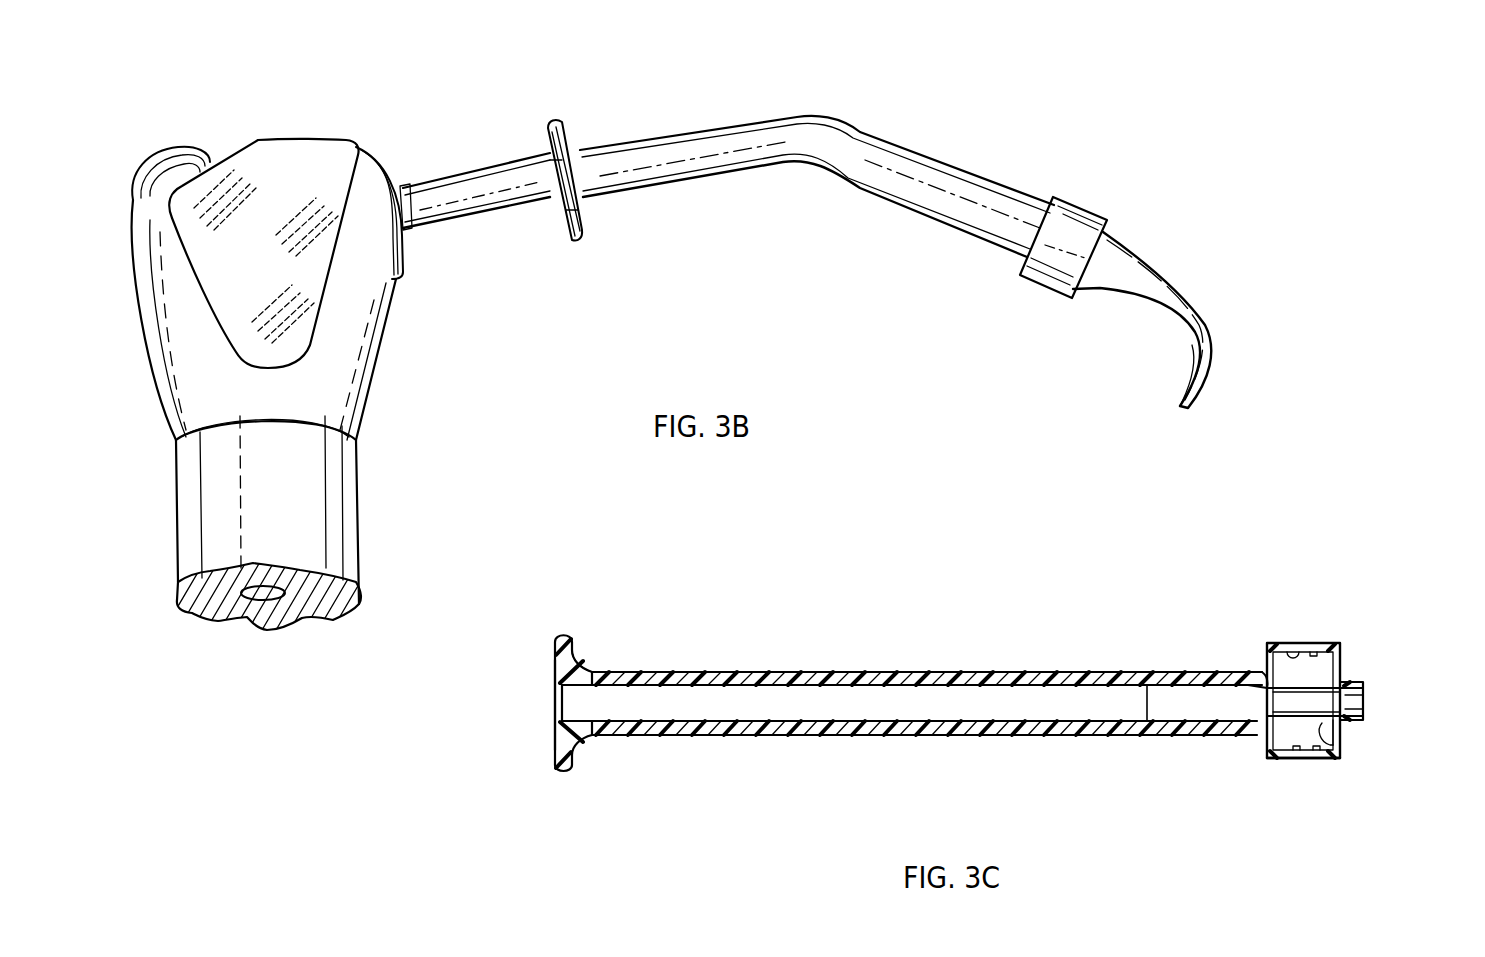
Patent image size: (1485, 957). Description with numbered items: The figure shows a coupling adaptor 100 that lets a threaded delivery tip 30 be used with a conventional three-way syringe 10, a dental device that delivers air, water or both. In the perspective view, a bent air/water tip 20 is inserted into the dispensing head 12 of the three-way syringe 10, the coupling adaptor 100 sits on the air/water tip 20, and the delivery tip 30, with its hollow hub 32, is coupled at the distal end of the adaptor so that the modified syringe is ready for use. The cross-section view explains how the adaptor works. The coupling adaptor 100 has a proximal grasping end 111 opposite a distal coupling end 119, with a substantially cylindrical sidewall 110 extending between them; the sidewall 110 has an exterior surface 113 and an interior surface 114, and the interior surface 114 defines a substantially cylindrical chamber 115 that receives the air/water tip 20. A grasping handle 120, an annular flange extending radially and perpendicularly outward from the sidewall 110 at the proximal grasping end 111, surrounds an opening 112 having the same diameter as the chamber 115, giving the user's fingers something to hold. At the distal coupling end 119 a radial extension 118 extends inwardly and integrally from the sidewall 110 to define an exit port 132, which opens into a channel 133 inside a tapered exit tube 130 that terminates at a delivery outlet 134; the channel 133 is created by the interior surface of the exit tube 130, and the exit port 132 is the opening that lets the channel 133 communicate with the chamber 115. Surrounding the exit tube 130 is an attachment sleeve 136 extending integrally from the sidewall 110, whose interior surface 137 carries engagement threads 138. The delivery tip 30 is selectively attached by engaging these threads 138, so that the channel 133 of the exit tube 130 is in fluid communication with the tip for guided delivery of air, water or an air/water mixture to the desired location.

In FIG. 3B, the three-way syringe 10 is at (401, 139).
In FIG. 3B, the dispensing head 12 is at (308, 140).
In FIG. 3B, the air/water tip 20 is at (430, 228).
In FIG. 3B, the delivery tip 30 is at (1170, 283).
In FIG. 3B, the hollow hub 32 is at (1117, 253).
In FIG. 3B, the coupling adaptor 100 is at (829, 120).
In FIG. 3C, the coupling adaptor 100 is at (757, 634).
In FIG. 3C, the sidewall 110 is at (910, 670).
In FIG. 3C, the proximal grasping end 111 is at (575, 655).
In FIG. 3C, the opening 112 is at (557, 680).
In FIG. 3C, the exterior surface 113 is at (1138, 678).
In FIG. 3C, the interior surface 114 is at (1147, 728).
In FIG. 3C, the chamber 115 is at (1208, 690).
In FIG. 3C, the radial extension 118 is at (1250, 678).
In FIG. 3C, the distal coupling end 119 is at (1263, 652).
In FIG. 3C, the grasping handle 120 is at (563, 637).
In FIG. 3C, the exit tube 130 is at (1354, 668).
In FIG. 3C, the exit port 132 is at (1267, 705).
In FIG. 3C, the channel 133 is at (1367, 695).
In FIG. 3C, the delivery outlet 134 is at (1368, 710).
In FIG. 3C, the attachment sleeve 136 is at (1330, 762).
In FIG. 3C, the interior surface 137 is at (1342, 737).
In FIG. 3C, the engagement threads 138 is at (1296, 656).